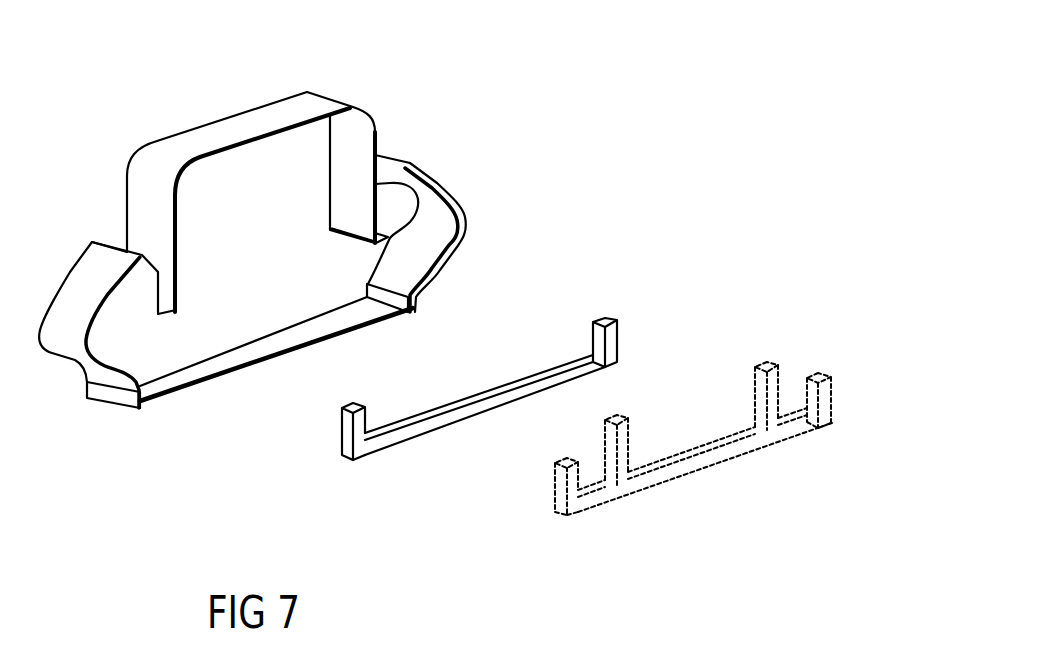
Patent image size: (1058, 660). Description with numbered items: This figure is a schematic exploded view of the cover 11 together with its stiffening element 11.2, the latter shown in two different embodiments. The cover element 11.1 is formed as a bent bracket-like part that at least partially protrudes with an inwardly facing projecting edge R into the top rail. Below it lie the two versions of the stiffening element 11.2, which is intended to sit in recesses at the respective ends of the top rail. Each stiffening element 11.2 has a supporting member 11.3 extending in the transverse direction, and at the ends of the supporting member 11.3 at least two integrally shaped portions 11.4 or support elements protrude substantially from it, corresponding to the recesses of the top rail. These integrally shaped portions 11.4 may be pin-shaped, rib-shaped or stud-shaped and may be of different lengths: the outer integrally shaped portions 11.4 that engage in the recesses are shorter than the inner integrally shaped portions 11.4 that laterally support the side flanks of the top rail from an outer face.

The cover 11 is at (689, 112).
The cover element 11.1 is at (247, 115).
The stiffening element 11.2 is at (631, 316).
The supporting member 11.3 is at (503, 400).
The integrally shaped portions 11.4 is at (612, 316).
The projecting edge R is at (178, 378).